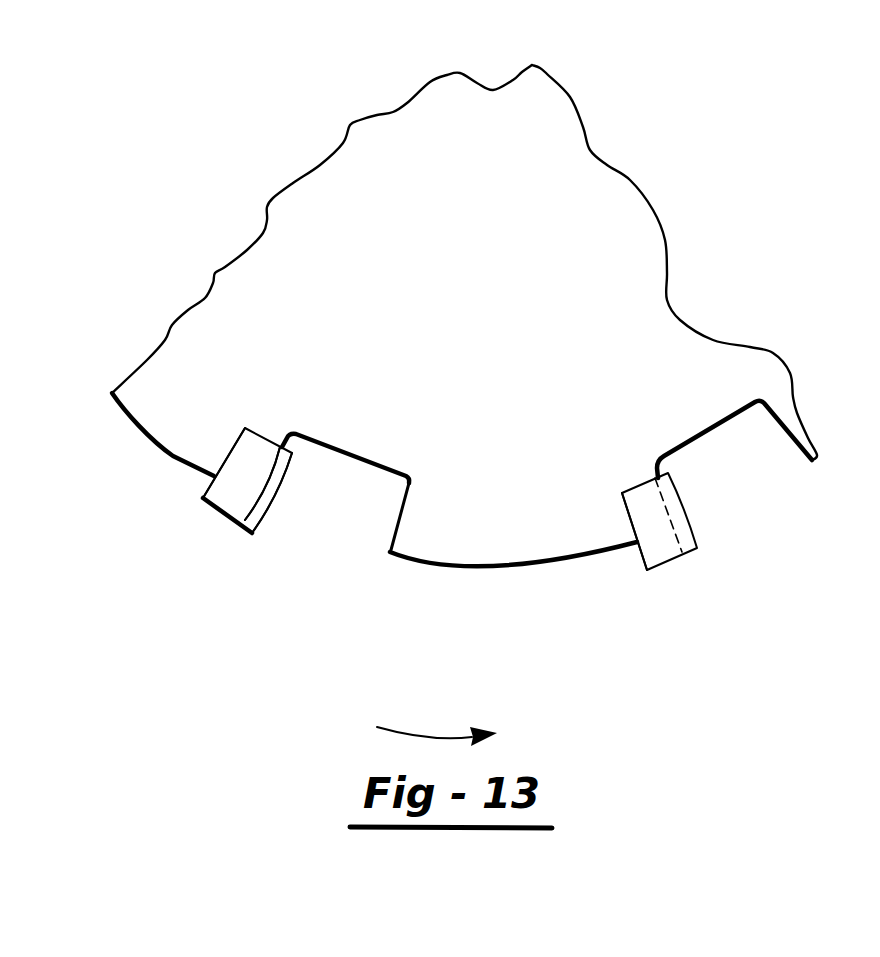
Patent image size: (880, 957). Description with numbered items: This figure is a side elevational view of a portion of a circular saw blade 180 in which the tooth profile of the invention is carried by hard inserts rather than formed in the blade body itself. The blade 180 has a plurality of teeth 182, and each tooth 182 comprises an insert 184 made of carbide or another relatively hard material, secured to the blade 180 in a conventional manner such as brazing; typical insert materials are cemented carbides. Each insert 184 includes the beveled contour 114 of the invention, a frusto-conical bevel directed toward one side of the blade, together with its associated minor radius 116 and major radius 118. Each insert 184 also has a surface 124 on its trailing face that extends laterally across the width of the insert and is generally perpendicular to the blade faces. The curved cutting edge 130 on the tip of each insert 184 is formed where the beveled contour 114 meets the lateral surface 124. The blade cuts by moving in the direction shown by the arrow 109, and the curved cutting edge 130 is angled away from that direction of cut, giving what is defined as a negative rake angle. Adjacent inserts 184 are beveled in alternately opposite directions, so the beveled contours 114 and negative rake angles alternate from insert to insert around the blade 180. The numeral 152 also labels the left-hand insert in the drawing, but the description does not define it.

The circular saw blade 180 is at (633, 236).
The tab 152 is at (183, 498).
The beveled contour 114 is at (256, 486).
The major radius 118 is at (233, 443).
The planar surface 124 is at (227, 517).
The curved cutting edge 130 is at (247, 527).
The minor radius 116 is at (260, 515).
The insert 184 is at (668, 562).
The tooth 182 is at (638, 575).
The arrow 109 is at (420, 732).